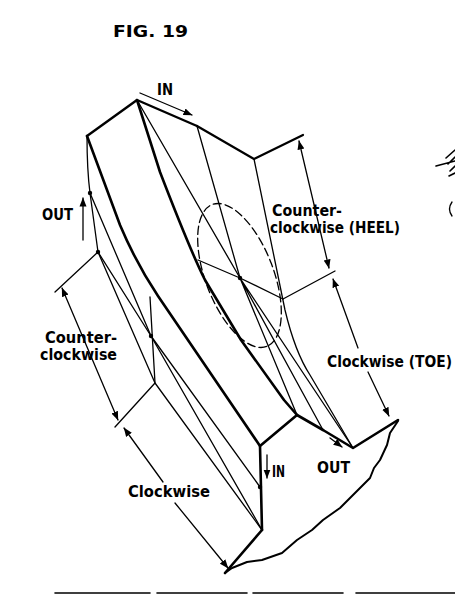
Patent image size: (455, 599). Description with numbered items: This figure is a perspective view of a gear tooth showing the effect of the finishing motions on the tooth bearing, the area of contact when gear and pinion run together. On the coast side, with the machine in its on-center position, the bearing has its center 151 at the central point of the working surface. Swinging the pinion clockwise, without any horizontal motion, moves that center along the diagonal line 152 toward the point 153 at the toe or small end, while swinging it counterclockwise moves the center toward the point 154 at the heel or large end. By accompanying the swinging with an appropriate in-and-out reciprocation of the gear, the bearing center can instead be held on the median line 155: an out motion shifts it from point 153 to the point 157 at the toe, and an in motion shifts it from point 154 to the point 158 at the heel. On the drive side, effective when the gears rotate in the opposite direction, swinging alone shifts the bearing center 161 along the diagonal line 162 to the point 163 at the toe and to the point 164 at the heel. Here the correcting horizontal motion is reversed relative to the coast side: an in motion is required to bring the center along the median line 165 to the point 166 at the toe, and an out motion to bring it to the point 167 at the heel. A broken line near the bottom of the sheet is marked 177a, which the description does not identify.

The center of the bearing 151 is at (240, 277).
The diagonal line 152 is at (284, 345).
The point at the toe 153 is at (354, 449).
The point at the heel 154 is at (137, 100).
The median line 155 is at (213, 191).
The point at the toe on line 155 157 is at (327, 428).
The point at the heel on line 155 158 is at (197, 126).
The bearing center 161 is at (150, 337).
The diagonal line 162 is at (205, 409).
The point at the toe 163 is at (263, 446).
The point at the heel 164 is at (97, 252).
The median line 165 is at (223, 450).
The point at the toe 166 is at (259, 488).
The point at the heel 167 is at (90, 192).
The base plate 177a is at (387, 588).